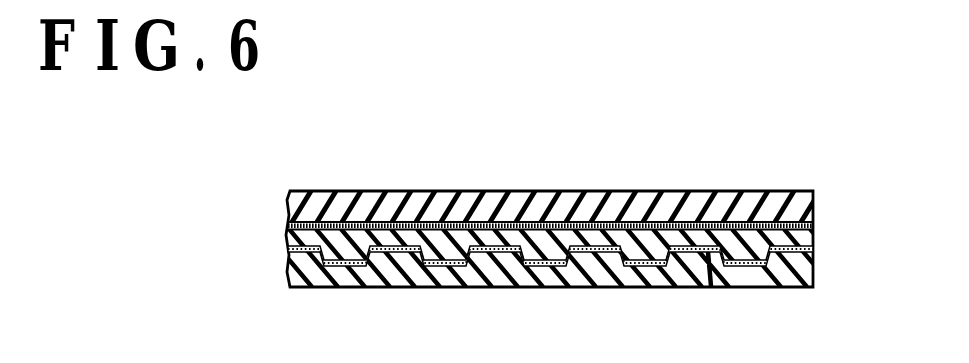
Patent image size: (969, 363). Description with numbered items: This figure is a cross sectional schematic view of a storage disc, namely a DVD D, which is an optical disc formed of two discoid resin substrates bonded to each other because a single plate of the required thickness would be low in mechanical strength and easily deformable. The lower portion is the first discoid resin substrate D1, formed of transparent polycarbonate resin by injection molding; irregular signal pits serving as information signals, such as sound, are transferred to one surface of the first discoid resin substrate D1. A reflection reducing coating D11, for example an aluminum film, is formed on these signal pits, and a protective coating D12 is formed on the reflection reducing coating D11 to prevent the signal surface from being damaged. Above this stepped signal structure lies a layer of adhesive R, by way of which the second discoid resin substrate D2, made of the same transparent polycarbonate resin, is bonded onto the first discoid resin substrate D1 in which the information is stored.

The DVD (optical disc) D is at (456, 183).
The second discoid resin substrate D2 is at (658, 192).
The adhesive R is at (748, 224).
The first discoid resin substrate D1 is at (497, 273).
The reflection reducing coating D11 is at (786, 255).
The protective coating D12 is at (813, 237).